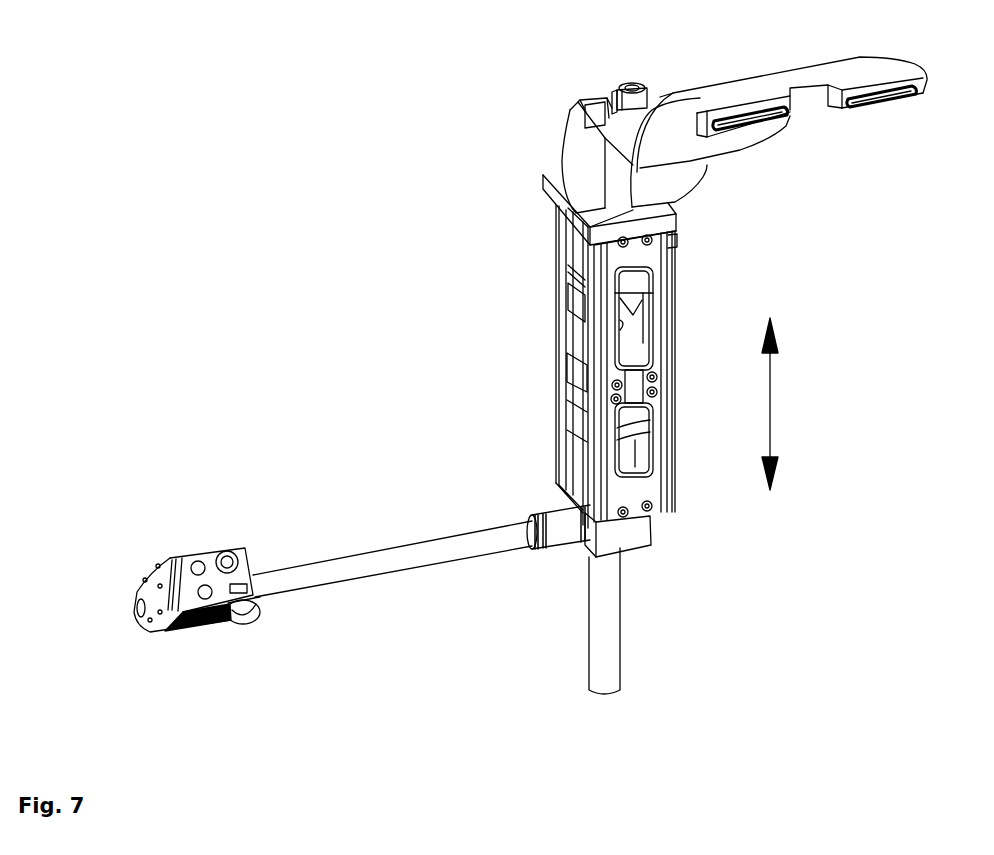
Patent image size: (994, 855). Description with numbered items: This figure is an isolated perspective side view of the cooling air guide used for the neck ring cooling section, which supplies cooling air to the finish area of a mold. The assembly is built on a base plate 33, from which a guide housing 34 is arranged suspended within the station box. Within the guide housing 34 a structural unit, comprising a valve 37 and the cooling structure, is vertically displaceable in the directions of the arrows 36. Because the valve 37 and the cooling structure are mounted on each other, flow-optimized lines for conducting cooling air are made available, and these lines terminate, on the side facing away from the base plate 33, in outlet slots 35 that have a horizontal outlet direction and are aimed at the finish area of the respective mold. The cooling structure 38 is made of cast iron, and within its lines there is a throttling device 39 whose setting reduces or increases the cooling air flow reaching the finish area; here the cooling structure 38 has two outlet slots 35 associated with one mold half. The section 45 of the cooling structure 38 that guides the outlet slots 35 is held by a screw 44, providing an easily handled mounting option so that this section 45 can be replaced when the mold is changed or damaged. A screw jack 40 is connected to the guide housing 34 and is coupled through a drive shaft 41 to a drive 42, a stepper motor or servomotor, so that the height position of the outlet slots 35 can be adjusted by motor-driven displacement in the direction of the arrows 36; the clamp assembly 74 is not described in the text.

The base plate 33 is at (547, 193).
The guide housing 34 is at (673, 263).
The outlet slots 35 is at (860, 101).
The arrows 36 is at (766, 393).
The valve 37 is at (663, 338).
The cooling structure 38 is at (690, 178).
The throttling device 39 is at (592, 182).
The screw jack 40 is at (640, 534).
The drive shaft 41 is at (381, 567).
The drive 42 is at (203, 550).
The screw 44 is at (631, 82).
The section 45 is at (741, 93).
The clamp 74 is at (564, 142).